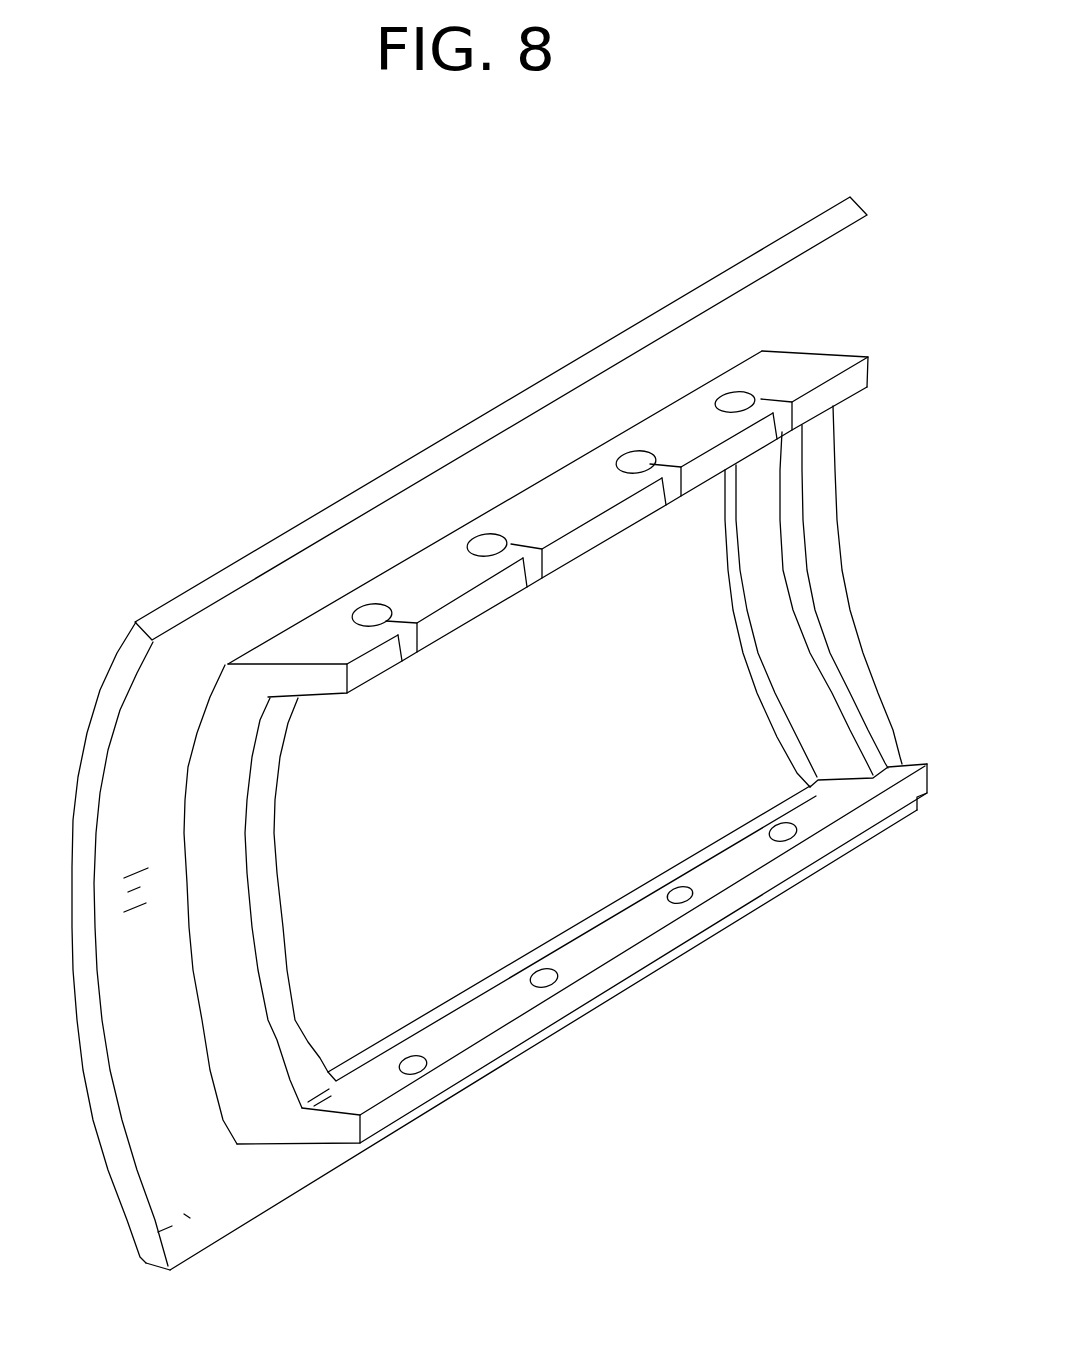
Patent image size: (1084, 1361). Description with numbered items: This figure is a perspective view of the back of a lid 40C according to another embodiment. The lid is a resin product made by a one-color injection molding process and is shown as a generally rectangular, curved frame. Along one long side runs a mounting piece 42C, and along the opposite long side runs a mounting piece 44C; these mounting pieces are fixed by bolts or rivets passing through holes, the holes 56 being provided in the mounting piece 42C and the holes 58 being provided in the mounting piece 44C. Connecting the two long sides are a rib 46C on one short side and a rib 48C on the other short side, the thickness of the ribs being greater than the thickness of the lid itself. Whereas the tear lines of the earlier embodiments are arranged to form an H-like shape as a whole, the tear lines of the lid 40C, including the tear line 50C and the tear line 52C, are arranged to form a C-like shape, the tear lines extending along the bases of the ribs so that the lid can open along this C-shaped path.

The lid 40C is at (613, 270).
The mounting piece 42C is at (524, 506).
The mounting piece 44C is at (625, 937).
The rib 46C is at (237, 1004).
The rib 48C is at (768, 590).
The tear line 50C is at (537, 950).
The tear line 52C is at (787, 742).
The holes 56 is at (368, 606).
The holes 58 is at (418, 1067).